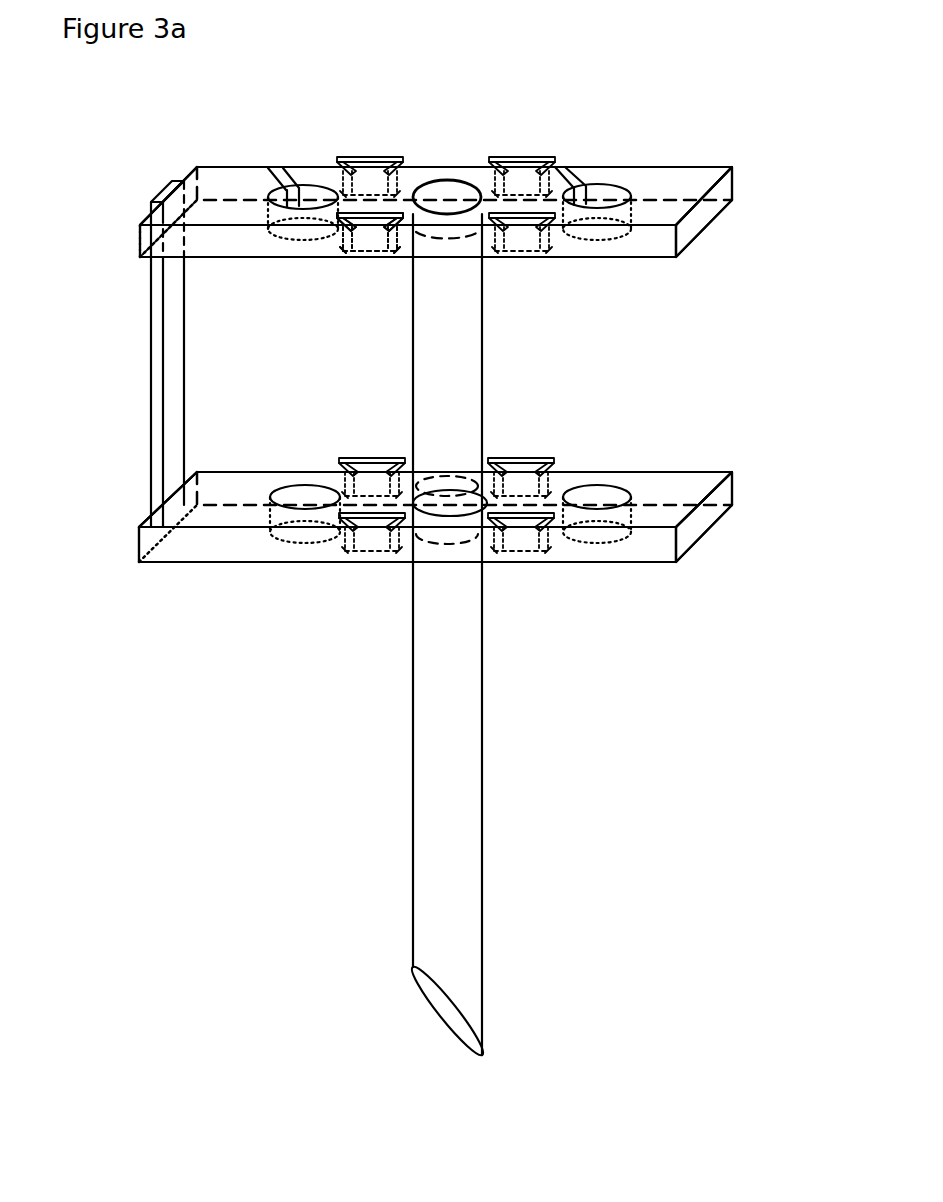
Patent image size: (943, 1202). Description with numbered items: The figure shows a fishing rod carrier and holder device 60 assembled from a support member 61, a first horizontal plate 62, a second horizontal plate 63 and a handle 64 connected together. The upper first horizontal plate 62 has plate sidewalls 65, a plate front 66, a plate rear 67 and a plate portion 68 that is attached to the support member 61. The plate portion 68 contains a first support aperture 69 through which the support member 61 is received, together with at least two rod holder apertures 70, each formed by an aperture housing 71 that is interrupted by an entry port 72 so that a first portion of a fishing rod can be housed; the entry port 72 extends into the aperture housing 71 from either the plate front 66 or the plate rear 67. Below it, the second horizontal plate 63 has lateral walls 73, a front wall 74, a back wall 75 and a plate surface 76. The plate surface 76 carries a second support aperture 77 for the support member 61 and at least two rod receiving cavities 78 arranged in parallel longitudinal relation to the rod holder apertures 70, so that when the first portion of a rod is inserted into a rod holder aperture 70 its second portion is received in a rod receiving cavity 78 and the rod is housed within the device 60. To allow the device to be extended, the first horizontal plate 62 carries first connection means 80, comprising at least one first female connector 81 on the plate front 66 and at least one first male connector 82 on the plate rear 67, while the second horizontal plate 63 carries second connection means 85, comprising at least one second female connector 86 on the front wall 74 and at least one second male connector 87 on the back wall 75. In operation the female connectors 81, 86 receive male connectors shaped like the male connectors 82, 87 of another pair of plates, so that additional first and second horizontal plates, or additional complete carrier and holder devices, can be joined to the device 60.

The fishing rod carrier and holder device 60 is at (352, 78).
The support member 61 is at (454, 856).
The first horizontal plate 62 is at (740, 192).
The second horizontal plate 63 is at (740, 487).
The handle 64 is at (162, 405).
The plate sidewalls 65 is at (140, 243).
The plate front 66 is at (245, 245).
The plate rear 67 is at (243, 178).
The plate portion 68 is at (682, 172).
The first support aperture 69 is at (450, 182).
The rod holder apertures 70 is at (612, 242).
The aperture housing 71 is at (605, 187).
The entry port 72 is at (580, 166).
The lateral walls 73 is at (705, 522).
The front wall 74 is at (630, 550).
The back wall 75 is at (232, 470).
The plate surface 76 is at (655, 480).
The second support aperture 77 is at (483, 505).
The rod receiving cavities 78 is at (598, 490).
The first connection means 80 is at (388, 250).
The first female connector 81 is at (368, 260).
The first male connector 82 is at (357, 157).
The second connection means 85 is at (528, 544).
The second female connector 86 is at (368, 548).
The second male connector 87 is at (400, 458).